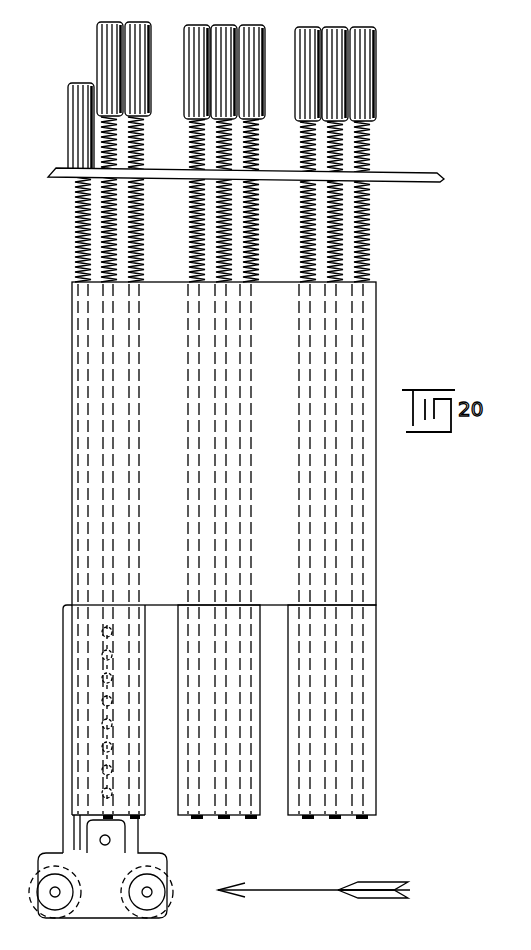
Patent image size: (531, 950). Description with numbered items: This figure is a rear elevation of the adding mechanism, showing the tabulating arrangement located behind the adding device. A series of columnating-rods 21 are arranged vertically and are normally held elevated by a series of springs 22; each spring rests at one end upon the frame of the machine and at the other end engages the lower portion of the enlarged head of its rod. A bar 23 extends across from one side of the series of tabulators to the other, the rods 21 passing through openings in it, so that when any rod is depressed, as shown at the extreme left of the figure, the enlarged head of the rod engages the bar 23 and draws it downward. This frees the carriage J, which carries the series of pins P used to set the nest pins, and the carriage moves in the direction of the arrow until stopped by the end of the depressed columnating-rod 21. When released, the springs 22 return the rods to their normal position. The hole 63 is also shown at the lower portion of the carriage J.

The columnating-rod 21 is at (70, 99).
The spring 22 is at (141, 236).
The bar 23 is at (404, 177).
The carriage J is at (63, 621).
The pin P is at (103, 628).
The hole 63 is at (103, 846).